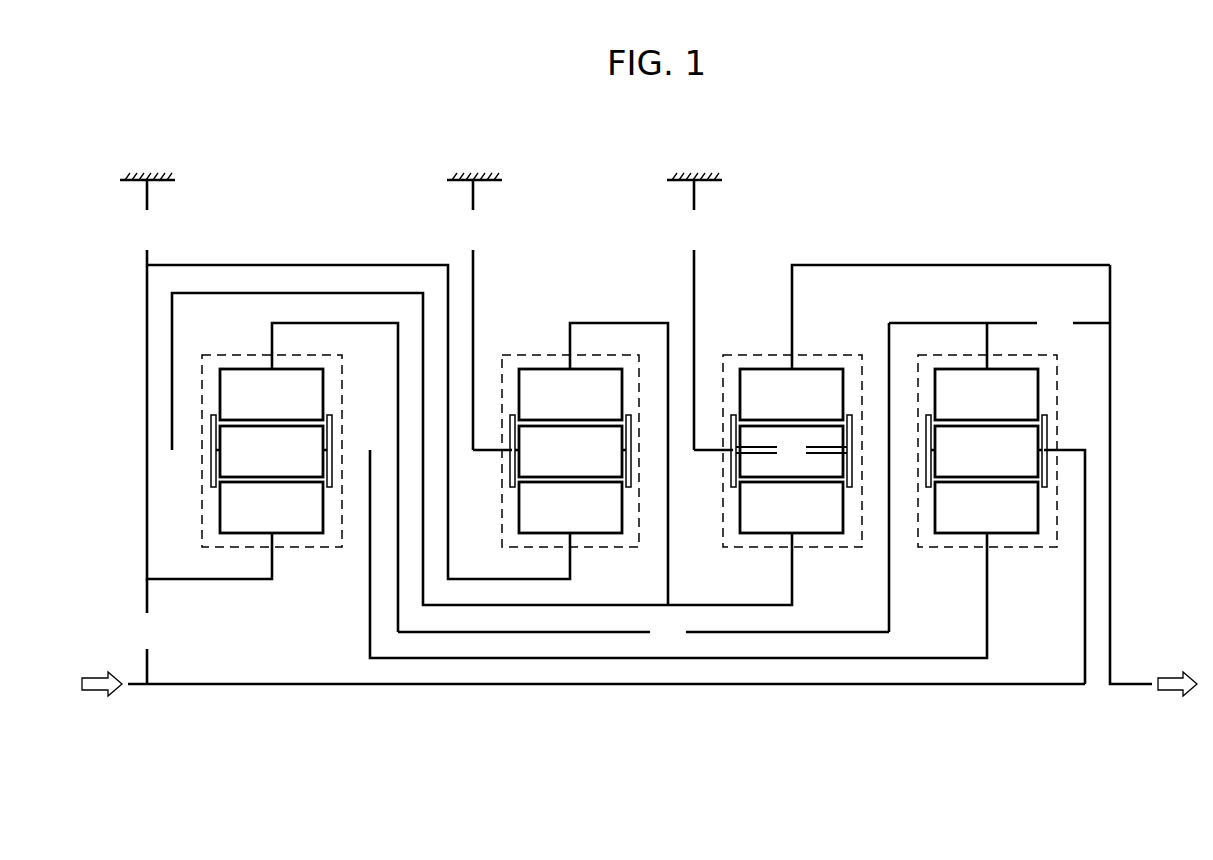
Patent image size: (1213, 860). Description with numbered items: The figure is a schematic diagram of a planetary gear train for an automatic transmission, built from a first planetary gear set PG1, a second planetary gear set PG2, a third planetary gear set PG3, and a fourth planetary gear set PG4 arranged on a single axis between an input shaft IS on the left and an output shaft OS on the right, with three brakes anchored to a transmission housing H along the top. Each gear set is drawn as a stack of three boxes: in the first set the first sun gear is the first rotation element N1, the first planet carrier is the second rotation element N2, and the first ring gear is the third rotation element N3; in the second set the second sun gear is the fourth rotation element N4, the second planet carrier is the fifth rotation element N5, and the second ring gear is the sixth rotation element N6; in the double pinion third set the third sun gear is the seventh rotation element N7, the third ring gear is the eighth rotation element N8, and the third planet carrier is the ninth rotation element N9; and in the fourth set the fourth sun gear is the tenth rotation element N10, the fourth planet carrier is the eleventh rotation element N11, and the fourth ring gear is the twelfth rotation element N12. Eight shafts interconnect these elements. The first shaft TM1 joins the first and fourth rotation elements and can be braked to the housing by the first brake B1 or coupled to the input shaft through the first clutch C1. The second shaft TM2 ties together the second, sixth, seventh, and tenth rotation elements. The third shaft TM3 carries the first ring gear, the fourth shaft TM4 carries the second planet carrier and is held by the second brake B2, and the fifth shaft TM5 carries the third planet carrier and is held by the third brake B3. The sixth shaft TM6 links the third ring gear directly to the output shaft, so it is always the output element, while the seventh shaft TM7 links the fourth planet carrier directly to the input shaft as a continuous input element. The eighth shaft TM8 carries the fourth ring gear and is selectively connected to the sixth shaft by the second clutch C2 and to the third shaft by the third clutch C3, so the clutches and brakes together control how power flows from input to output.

The input shaft IS is at (140, 686).
The output shaft OS is at (1108, 686).
The transmission housing H is at (149, 177).
The first brake B1 is at (147, 222).
The second brake B2 is at (473, 315).
The third brake B3 is at (694, 315).
The first clutch C1 is at (147, 631).
The second clutch C2 is at (999, 323).
The third clutch C3 is at (643, 631).
The first shaft TM1 is at (343, 265).
The second shaft TM2 is at (530, 607).
The third shaft TM3 is at (396, 586).
The fourth shaft TM4 is at (473, 291).
The fifth shaft TM5 is at (694, 295).
The sixth shaft TM6 is at (1013, 265).
The seventh shaft TM7 is at (1086, 585).
The eighth shaft TM8 is at (914, 323).
The first planetary gear set PG1 is at (246, 553).
The second planetary gear set PG2 is at (544, 553).
The third planetary gear set PG3 is at (766, 553).
The fourth planetary gear set PG4 is at (1013, 553).
The first rotation element N1 is at (240, 550).
The second rotation element N2 is at (212, 486).
The third rotation element N3 is at (271, 394).
The fourth rotation element N4 is at (598, 550).
The fifth rotation element N5 is at (511, 486).
The sixth rotation element N6 is at (570, 394).
The seventh rotation element N7 is at (818, 550).
The eighth rotation element N8 is at (791, 394).
The ninth rotation element N9 is at (732, 486).
The tenth rotation element N10 is at (1013, 550).
The eleventh rotation element N11 is at (1046, 415).
The twelfth rotation element N12 is at (986, 394).